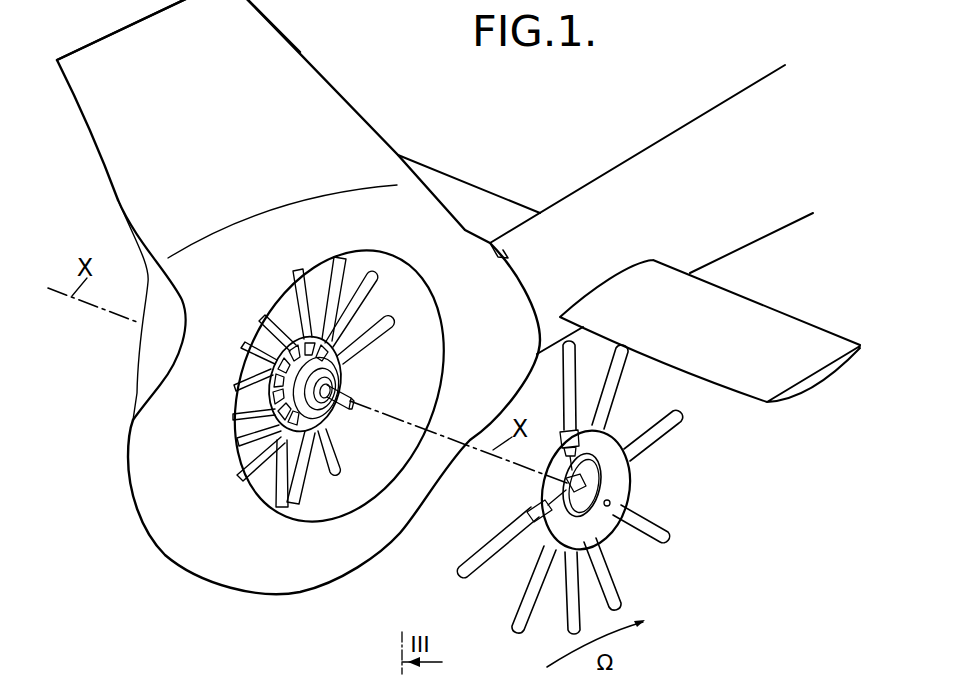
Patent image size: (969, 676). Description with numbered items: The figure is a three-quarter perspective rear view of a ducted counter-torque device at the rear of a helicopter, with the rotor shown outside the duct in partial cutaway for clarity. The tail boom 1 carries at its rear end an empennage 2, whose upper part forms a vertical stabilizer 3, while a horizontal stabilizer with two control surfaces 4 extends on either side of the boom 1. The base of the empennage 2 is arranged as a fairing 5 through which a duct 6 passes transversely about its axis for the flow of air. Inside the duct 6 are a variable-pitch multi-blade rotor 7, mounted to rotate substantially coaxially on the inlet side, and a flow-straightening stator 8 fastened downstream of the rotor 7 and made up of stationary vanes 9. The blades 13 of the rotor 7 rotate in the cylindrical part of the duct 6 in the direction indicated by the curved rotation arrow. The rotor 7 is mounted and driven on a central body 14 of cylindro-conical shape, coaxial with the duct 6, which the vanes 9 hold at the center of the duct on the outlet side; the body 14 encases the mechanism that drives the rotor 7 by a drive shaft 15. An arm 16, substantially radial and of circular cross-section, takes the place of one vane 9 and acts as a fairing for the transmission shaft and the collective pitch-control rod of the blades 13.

The tail boom 1 is at (703, 150).
The empennage 2 is at (395, 148).
The vertical stabilizer 3 is at (237, 33).
The control surfaces 4 is at (484, 210).
The fairing 5 is at (183, 448).
The duct 6 is at (291, 405).
The rotor 7 is at (574, 487).
The flow-straightening stator 8 is at (303, 473).
The stationary vanes 9 is at (253, 462).
The blades 13 is at (605, 578).
The central body 14 is at (277, 352).
The drive shaft 15 is at (345, 402).
The arm 16 is at (366, 272).